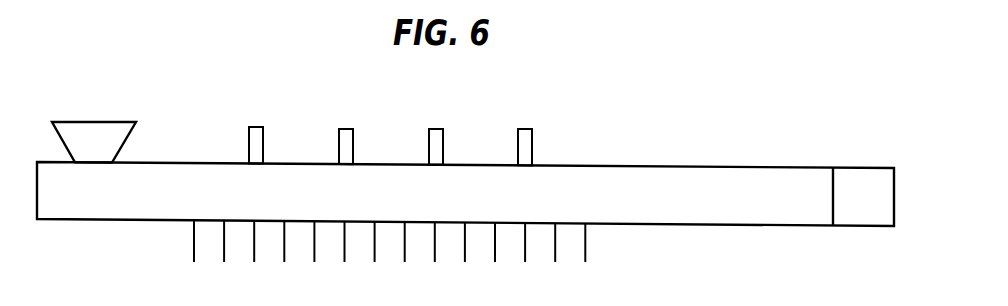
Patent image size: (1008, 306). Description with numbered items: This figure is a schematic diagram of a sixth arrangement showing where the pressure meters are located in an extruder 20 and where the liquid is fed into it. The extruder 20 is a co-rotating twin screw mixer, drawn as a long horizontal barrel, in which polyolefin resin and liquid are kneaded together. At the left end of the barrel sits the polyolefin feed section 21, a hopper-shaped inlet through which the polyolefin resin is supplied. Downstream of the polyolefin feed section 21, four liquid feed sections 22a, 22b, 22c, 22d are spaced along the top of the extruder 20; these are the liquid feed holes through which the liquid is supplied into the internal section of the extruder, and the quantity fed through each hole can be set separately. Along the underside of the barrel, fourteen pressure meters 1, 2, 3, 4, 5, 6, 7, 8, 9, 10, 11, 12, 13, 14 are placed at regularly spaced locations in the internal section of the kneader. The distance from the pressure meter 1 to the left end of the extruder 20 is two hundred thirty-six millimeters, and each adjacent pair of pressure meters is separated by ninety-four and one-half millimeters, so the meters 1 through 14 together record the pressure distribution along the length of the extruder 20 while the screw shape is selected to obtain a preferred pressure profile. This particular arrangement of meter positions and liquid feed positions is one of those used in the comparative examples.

The extruder 20 is at (728, 184).
The polyolefin feed section 21 is at (94, 130).
The liquid feed section 22a is at (258, 127).
The liquid feed section 22b is at (346, 128).
The liquid feed section 22c is at (437, 128).
The liquid feed section 22d is at (526, 128).
The pressure meter 1 is at (193, 258).
The pressure meter 2 is at (223, 259).
The pressure meter 3 is at (254, 258).
The pressure meter 4 is at (284, 258).
The pressure meter 5 is at (314, 258).
The pressure meter 6 is at (344, 259).
The pressure meter 7 is at (374, 259).
The pressure meter 8 is at (404, 259).
The pressure meter 9 is at (434, 259).
The pressure meter 10 is at (465, 260).
The pressure meter 11 is at (495, 259).
The pressure meter 12 is at (525, 259).
The pressure meter 13 is at (555, 259).
The pressure meter 14 is at (585, 260).